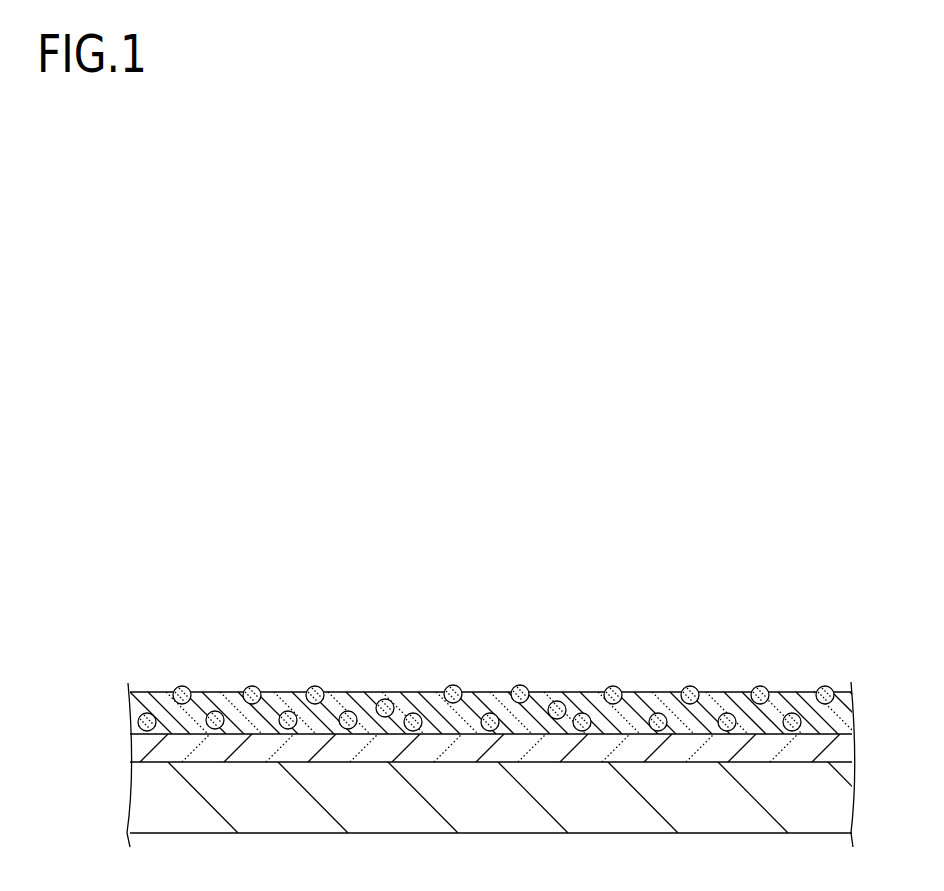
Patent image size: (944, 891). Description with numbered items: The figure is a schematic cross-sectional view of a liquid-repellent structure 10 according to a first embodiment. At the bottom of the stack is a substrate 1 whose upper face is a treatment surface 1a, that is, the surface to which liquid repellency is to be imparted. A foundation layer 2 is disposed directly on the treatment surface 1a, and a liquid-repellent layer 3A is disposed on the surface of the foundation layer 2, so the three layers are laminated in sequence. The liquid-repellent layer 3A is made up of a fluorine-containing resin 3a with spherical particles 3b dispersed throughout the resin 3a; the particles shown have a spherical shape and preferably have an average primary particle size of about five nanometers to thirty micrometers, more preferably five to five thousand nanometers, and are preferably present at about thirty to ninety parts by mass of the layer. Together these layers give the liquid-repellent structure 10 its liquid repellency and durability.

The liquid-repellent structure 10 is at (512, 690).
The substrate 1 is at (637, 813).
The treatment surface 1a is at (360, 750).
The foundation layer 2 is at (202, 750).
The liquid-repellent layer 3A is at (511, 650).
The fluorine-containing resin 3a is at (397, 690).
The spherical particles 3b is at (385, 608).